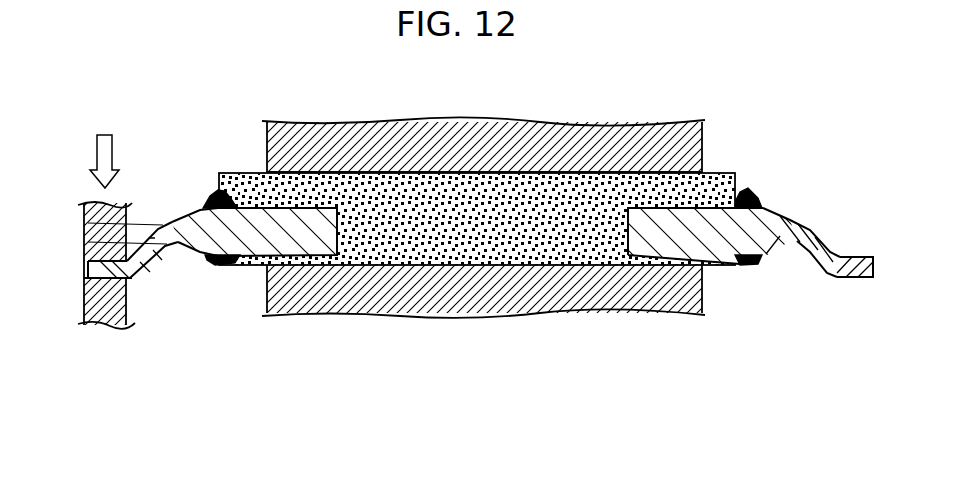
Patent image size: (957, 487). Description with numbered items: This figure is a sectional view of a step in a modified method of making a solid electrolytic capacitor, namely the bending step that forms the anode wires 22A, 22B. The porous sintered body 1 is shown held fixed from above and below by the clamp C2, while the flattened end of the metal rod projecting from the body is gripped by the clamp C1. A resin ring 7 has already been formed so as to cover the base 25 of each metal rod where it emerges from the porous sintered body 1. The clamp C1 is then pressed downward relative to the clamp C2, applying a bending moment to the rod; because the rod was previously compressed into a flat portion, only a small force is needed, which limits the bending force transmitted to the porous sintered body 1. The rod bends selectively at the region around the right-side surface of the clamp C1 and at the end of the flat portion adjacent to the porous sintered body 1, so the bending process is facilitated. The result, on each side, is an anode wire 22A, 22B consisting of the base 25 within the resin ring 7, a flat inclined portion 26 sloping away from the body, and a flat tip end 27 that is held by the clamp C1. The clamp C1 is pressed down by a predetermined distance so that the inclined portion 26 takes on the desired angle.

The porous sintered body 1 is at (478, 190).
The resin ring 7 is at (208, 198).
The base 25 is at (235, 258).
The inclined portion 26 is at (158, 262).
The tip end 27 is at (131, 273).
The anode wire 22A is at (265, 383).
The anode wire 22B is at (870, 383).
The clamp C1 is at (84, 314).
The clamp C2 is at (497, 306).